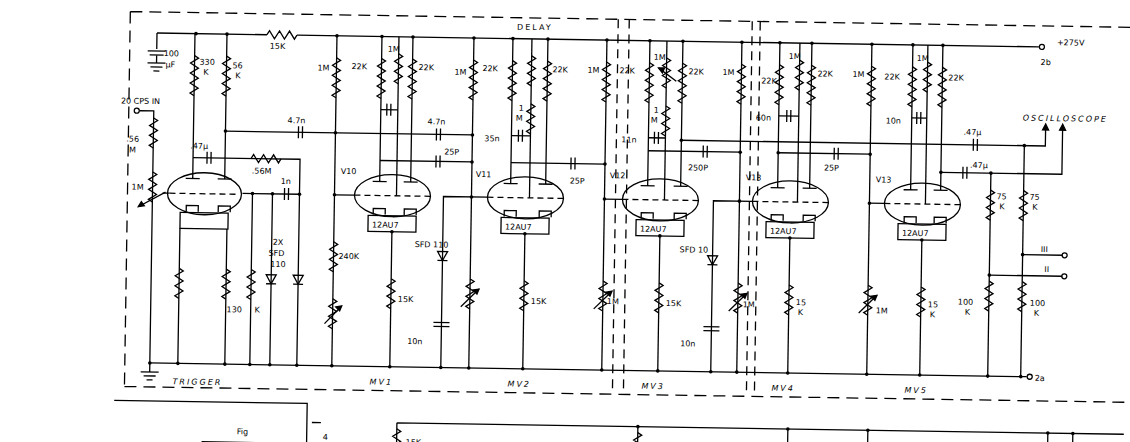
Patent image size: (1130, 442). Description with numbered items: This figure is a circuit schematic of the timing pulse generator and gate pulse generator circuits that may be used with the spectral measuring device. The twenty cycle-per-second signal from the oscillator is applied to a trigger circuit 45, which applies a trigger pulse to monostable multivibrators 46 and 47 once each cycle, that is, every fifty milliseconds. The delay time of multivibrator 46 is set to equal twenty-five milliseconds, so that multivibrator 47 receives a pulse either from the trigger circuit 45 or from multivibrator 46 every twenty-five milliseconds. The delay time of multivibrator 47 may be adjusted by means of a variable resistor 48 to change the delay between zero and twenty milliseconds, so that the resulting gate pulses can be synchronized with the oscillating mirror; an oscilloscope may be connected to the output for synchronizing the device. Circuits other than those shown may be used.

The trigger circuit 45 is at (205, 254).
The monostable multivibrator 46 is at (364, 293).
The monostable multivibrator 47 is at (500, 266).
The variable resistor 48 is at (527, 59).